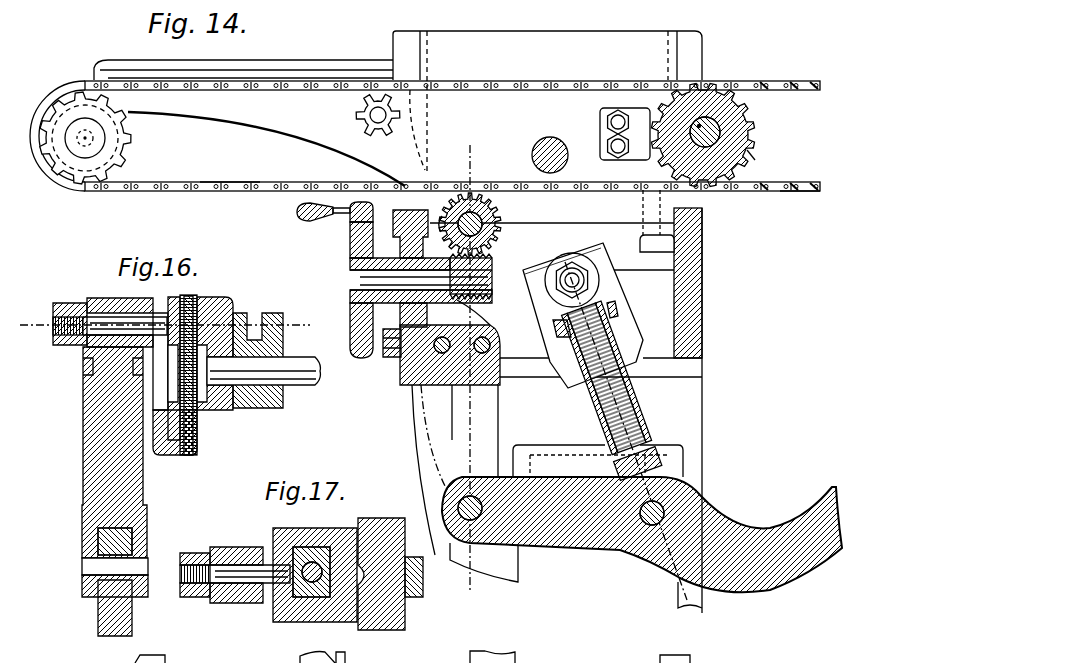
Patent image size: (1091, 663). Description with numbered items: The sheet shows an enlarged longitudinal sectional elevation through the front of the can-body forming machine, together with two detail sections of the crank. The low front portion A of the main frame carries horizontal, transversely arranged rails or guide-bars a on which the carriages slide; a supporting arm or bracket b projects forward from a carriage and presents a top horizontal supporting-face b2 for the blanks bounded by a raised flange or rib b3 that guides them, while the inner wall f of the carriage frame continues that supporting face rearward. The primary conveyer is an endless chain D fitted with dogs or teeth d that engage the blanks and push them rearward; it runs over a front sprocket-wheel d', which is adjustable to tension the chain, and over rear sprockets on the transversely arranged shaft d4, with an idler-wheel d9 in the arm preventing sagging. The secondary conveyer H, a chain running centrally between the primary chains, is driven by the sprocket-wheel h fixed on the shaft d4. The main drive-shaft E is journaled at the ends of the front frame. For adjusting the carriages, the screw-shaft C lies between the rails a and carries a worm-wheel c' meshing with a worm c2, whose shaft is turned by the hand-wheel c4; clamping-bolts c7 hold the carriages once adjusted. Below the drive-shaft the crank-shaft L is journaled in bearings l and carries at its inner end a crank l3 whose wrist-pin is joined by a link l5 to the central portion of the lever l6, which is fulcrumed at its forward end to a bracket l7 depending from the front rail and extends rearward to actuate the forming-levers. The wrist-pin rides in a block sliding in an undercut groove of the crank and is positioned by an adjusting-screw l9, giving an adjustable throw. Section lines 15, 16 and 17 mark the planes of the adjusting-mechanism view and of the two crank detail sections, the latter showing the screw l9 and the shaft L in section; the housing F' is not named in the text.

In FIG. 14, the top horizontal supporting-faces b2 is at (262, 80).
In FIG. 14, the raised flanges or ribs b3 is at (250, 55).
In FIG. 14, the housing F' is at (547, 103).
In FIG. 14, the dogs or teeth d is at (425, 141).
In FIG. 14, the sprocket-wheels d' is at (98, 138).
In FIG. 14, the supporting arm or bracket b is at (266, 143).
In FIG. 14, the endless chains D is at (230, 169).
In FIG. 14, the idler-wheels d9 is at (363, 114).
In FIG. 14, the main drive-shaft E is at (560, 138).
In FIG. 14, the inner walls f is at (571, 134).
In FIG. 14, the section line 15- 15 is at (475, 368).
In FIG. 14, the transversely-arranged shaft d4 is at (735, 130).
In FIG. 14, the sprocket-wheel h is at (759, 159).
In FIG. 14, the secondary conveyer H is at (800, 217).
In FIG. 14, the front portion of the main frame A is at (696, 398).
In FIG. 14, the rails or guide-bars a is at (714, 223).
In FIG. 14, the clamping-bolts c7 is at (644, 222).
In FIG. 14, the screw-shaft C is at (501, 218).
In FIG. 14, the worm-wheel c' is at (483, 235).
In FIG. 14, the worm c2 is at (481, 284).
In FIG. 14, the hand-wheel c4 is at (352, 251).
In FIG. 14, the bracket l7 is at (461, 419).
In FIG. 14, the crank l3 is at (620, 301).
In FIG. 16, the crank l3 is at (151, 368).
In FIG. 14, the section line 16- 16 is at (617, 421).
In FIG. 14, the link l5 is at (640, 392).
In FIG. 16, the link l5 is at (102, 472).
In FIG. 14, the lever l6 is at (642, 518).
In FIG. 16, the lever l6 is at (100, 608).
In FIG. 16, the section line 17- 17 is at (168, 317).
In FIG. 16, the adjusting-screw l9 is at (187, 455).
In FIG. 17, the adjusting-screw l9 is at (312, 605).
In FIG. 16, the bearings l is at (248, 370).
In FIG. 17, the bearings l is at (381, 561).
In FIG. 16, the crank-shaft L is at (270, 378).
In FIG. 17, the crank-shaft L is at (424, 583).